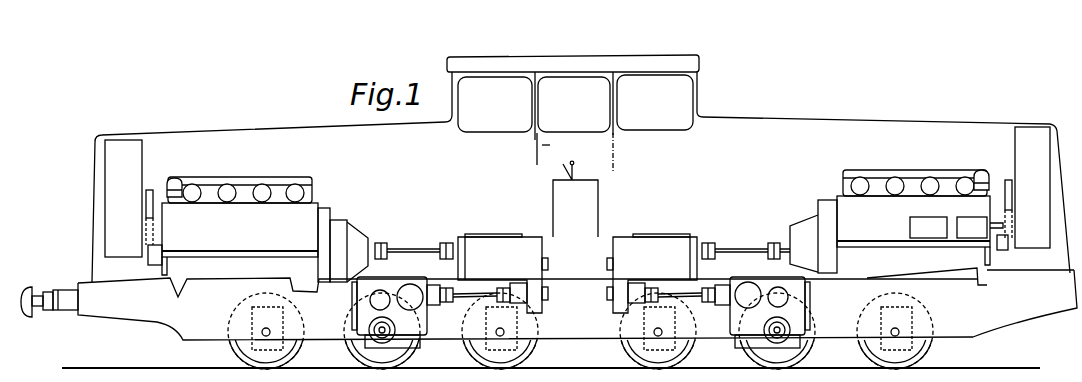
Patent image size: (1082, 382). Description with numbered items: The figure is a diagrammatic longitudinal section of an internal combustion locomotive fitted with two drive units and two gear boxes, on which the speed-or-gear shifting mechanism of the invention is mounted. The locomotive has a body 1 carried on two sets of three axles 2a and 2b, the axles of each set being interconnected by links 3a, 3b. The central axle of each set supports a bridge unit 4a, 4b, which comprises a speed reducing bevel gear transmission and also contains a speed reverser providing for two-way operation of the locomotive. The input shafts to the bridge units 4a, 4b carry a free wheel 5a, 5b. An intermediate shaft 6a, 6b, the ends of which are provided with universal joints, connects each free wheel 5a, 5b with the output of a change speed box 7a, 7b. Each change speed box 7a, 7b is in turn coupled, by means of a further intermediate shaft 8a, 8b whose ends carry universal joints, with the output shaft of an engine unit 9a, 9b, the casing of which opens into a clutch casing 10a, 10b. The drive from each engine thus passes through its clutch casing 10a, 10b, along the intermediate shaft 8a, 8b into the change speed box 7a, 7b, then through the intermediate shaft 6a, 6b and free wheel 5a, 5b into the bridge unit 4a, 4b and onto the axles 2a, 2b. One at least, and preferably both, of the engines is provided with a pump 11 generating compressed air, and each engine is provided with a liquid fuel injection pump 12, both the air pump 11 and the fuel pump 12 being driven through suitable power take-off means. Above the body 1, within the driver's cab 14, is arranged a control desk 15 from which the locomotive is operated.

The body 1 is at (980, 303).
The axles 2a is at (907, 350).
The axles 2b is at (513, 353).
The links 3a is at (713, 338).
The links 3b is at (323, 342).
The bridge unit 4a is at (797, 297).
The bridge unit 4b is at (367, 297).
The free wheel 5a is at (722, 280).
The free wheel 5b is at (435, 290).
The intermediate shaft 6a is at (670, 280).
The intermediate shaft 6b is at (478, 293).
The change speed box 7a is at (629, 265).
The change speed box 7b is at (520, 267).
The intermediate shaft 8a is at (740, 242).
The intermediate shaft 8b is at (412, 248).
The engine unit 9a is at (857, 222).
The engine unit 9b is at (238, 212).
The clutch casing 10a is at (823, 237).
The clutch casing 10b is at (333, 232).
The pump 11 is at (975, 228).
The liquid fuel injection pump 12 is at (930, 227).
The driver's cab 14 is at (617, 63).
The control desk 15 is at (587, 197).